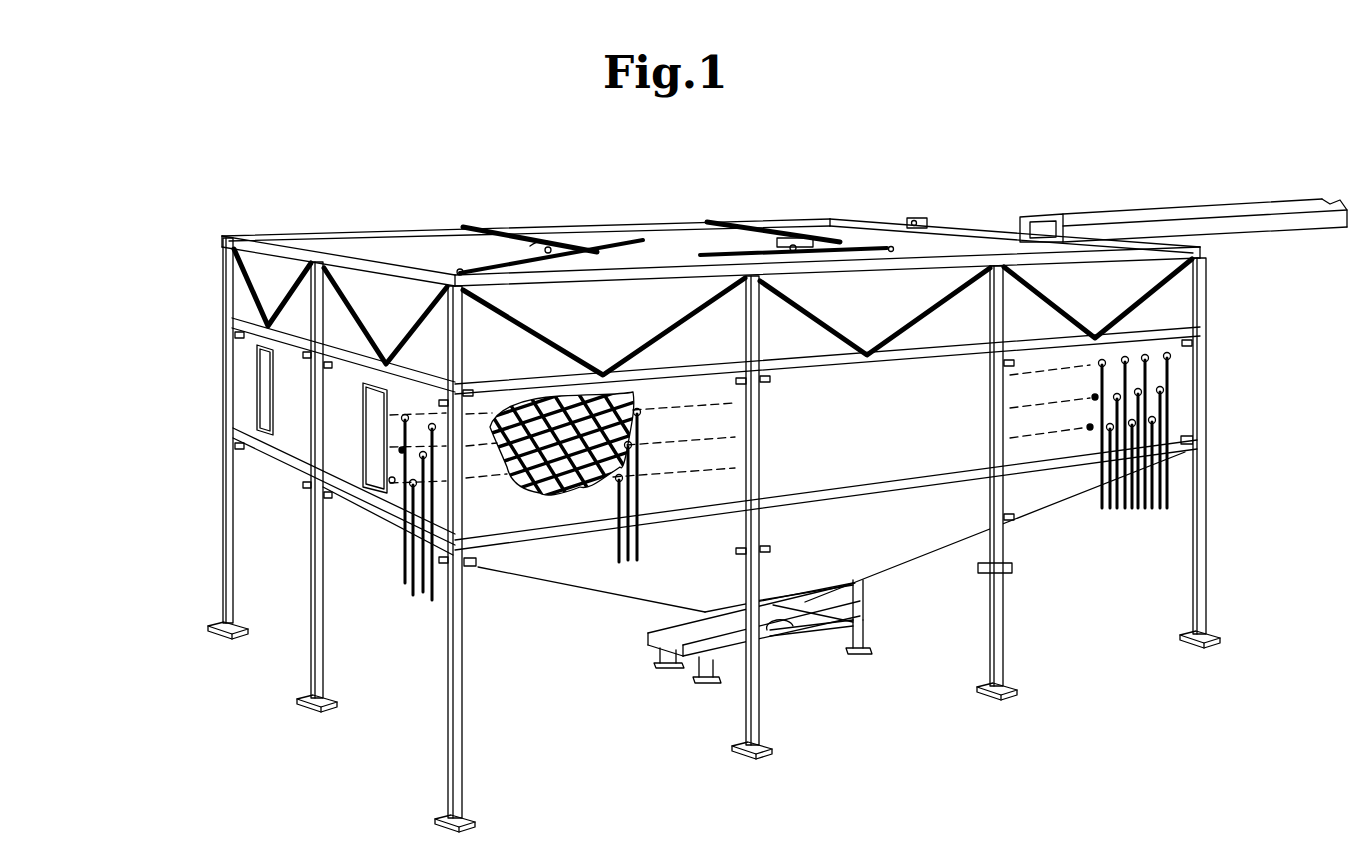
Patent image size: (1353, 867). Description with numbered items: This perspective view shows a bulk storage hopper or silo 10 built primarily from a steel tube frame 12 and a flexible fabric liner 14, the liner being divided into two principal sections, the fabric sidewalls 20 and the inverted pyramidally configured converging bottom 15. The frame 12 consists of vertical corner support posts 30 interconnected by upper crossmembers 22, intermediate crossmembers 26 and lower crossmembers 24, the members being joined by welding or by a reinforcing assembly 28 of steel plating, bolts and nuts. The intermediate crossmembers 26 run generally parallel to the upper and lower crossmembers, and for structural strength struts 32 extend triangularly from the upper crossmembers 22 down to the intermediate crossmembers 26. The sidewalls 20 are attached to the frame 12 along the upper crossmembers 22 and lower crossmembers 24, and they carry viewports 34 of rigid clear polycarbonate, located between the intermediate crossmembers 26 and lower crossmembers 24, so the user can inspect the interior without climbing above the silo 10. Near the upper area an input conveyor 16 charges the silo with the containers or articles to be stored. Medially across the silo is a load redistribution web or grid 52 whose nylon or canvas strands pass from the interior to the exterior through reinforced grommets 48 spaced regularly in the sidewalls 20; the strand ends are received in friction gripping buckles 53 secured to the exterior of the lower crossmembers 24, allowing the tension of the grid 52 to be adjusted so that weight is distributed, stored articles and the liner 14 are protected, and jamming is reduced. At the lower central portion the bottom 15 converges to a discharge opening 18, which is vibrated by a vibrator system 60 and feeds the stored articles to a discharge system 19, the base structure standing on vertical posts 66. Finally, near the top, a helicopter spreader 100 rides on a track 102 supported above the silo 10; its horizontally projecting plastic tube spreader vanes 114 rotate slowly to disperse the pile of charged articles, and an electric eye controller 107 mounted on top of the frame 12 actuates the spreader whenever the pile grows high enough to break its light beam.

The bulk storage hopper or silo 10 is at (205, 356).
The steel tube frame 12 is at (765, 720).
The flexible fabric liner 14 is at (905, 418).
The converging bottom 15 is at (870, 552).
The input conveyor 16 is at (1220, 207).
The discharge opening 18 is at (727, 612).
The discharge system 19 is at (882, 585).
The sidewalls 20 is at (595, 515).
The upper crossmembers 22 is at (640, 278).
The lower crossmembers 24 is at (695, 518).
The intermediate crossmembers 26 is at (817, 365).
The reinforcing assembly 28 is at (478, 313).
The vertical corner support posts 30 is at (1203, 571).
The struts 32 is at (550, 340).
The viewports 34 is at (373, 427).
The reinforced grommets 48 is at (1168, 357).
The load redistribution web 52 is at (1170, 410).
The friction gripping buckles 53 is at (1193, 438).
The vibrator system 60 is at (680, 633).
The vertical posts 66 is at (867, 637).
The helicopter spreader 100 is at (532, 248).
The track 102 is at (540, 238).
The electric eye controller 107 is at (908, 220).
The spreader vanes 114 is at (456, 268).